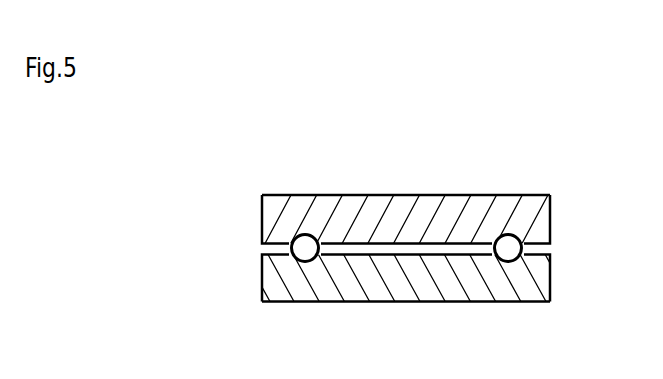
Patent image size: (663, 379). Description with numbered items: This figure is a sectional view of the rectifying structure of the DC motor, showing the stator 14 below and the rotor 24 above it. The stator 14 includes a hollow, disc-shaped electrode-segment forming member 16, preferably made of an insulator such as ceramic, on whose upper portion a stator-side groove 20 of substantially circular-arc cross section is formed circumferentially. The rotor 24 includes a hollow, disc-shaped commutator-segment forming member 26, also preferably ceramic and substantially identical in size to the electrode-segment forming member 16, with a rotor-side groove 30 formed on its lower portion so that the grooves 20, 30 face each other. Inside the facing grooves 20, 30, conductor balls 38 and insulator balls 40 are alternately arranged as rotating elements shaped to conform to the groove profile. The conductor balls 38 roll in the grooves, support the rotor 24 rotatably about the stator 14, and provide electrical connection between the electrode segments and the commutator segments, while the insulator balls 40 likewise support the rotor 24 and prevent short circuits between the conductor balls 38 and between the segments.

The stator 14 is at (554, 272).
The electrode-segment forming member 16 is at (547, 297).
The stator-side groove 20 is at (303, 263).
The rotor 24 is at (554, 227).
The commutator-segment forming member 26 is at (547, 200).
The rotor-side groove 30 is at (303, 233).
The conductor ball 38 is at (407, 200).
The insulator ball 40 is at (310, 248).